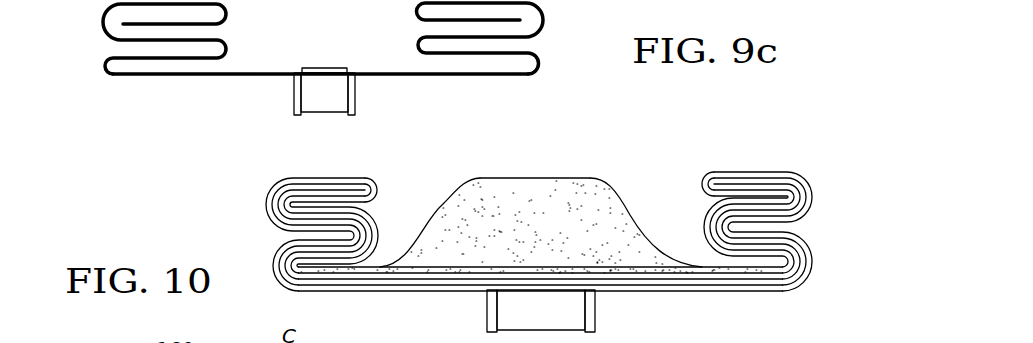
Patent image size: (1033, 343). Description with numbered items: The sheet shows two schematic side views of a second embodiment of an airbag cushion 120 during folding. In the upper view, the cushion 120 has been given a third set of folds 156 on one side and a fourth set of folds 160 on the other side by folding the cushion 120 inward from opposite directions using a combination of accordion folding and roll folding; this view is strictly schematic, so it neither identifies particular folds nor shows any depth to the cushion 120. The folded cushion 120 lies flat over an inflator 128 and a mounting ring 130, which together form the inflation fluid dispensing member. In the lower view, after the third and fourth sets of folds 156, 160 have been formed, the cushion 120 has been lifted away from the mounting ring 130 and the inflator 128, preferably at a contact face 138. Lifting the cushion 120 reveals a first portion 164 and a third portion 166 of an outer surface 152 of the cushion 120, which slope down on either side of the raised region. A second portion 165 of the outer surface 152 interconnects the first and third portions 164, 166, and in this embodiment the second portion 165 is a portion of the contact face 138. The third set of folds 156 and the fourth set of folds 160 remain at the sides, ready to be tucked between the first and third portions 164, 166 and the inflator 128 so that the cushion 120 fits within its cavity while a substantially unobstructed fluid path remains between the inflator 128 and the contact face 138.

In FIG. 9C, the cushion 120 is at (319, 61).
In FIG. 10, the cushion 120 is at (539, 250).
In FIG. 9C, the inflator 128 is at (327, 88).
In FIG. 10, the inflator 128 is at (540, 308).
In FIG. 9C, the mounting ring 130 is at (295, 95).
In FIG. 10, the mounting ring 130 is at (595, 307).
In FIG. 9C, the third set of folds 156 is at (552, 43).
In FIG. 10, the third set of folds 156 is at (813, 229).
In FIG. 9C, the fourth set of folds 160 is at (97, 45).
In FIG. 10, the fourth set of folds 160 is at (268, 235).
In FIG. 10, the contact face 138 is at (531, 192).
In FIG. 10, the outer surface 152 is at (580, 178).
In FIG. 10, the first portion 164 is at (645, 225).
In FIG. 10, the second portion 165 is at (535, 177).
In FIG. 10, the third portion 166 is at (435, 218).